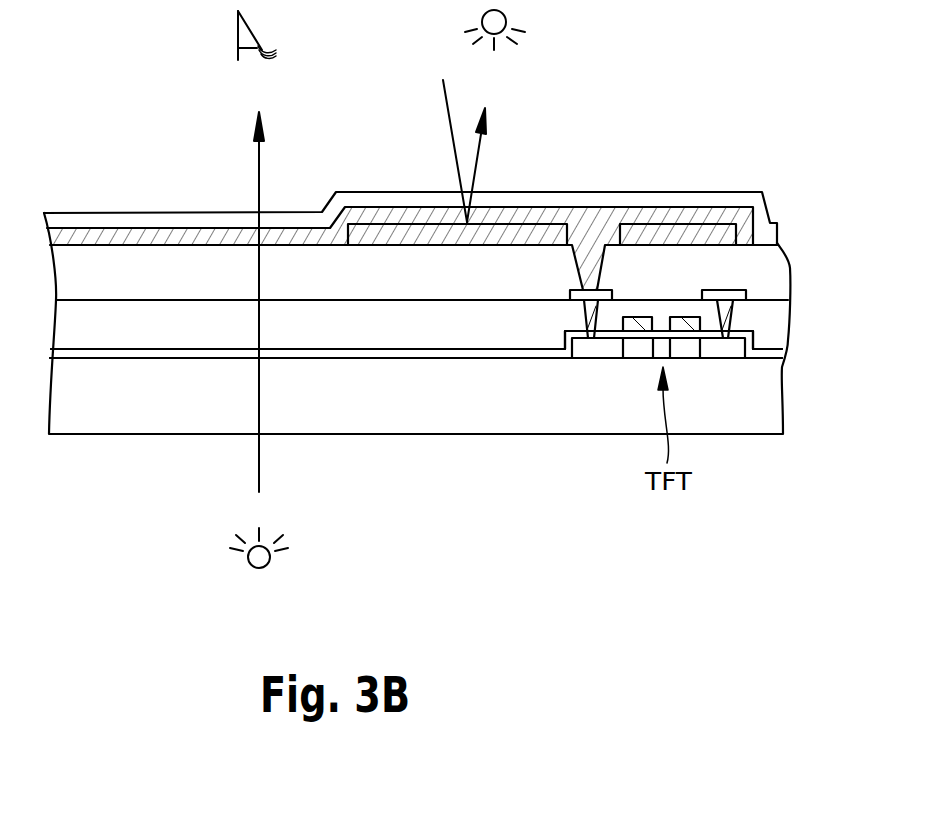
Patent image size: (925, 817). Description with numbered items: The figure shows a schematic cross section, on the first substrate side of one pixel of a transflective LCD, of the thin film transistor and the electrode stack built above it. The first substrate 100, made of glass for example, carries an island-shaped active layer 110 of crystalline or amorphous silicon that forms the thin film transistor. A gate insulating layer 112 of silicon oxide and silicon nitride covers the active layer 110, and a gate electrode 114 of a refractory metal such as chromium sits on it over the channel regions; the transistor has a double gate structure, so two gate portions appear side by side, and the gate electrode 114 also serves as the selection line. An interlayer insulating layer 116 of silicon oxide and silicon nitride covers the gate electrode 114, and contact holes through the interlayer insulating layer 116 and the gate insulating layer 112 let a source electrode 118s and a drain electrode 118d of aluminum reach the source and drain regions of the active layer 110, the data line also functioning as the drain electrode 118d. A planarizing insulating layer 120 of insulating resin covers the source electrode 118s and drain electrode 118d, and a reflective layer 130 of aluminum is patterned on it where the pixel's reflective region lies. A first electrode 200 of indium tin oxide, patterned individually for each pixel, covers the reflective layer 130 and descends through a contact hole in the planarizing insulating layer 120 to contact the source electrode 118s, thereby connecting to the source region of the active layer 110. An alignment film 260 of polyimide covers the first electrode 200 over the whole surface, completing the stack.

The first substrate 100 is at (133, 388).
The active layer 110 is at (588, 358).
The gate insulating layer 112 is at (334, 355).
The gate electrode 114 is at (685, 320).
The interlayer insulating layer 116 is at (198, 317).
The source electrode 118s is at (582, 303).
The drain electrode 118d is at (732, 307).
The planarizing insulating layer 120 is at (95, 273).
The reflective layer 130 is at (363, 230).
The first electrode 200 is at (608, 225).
The alignment film 260 is at (163, 217).